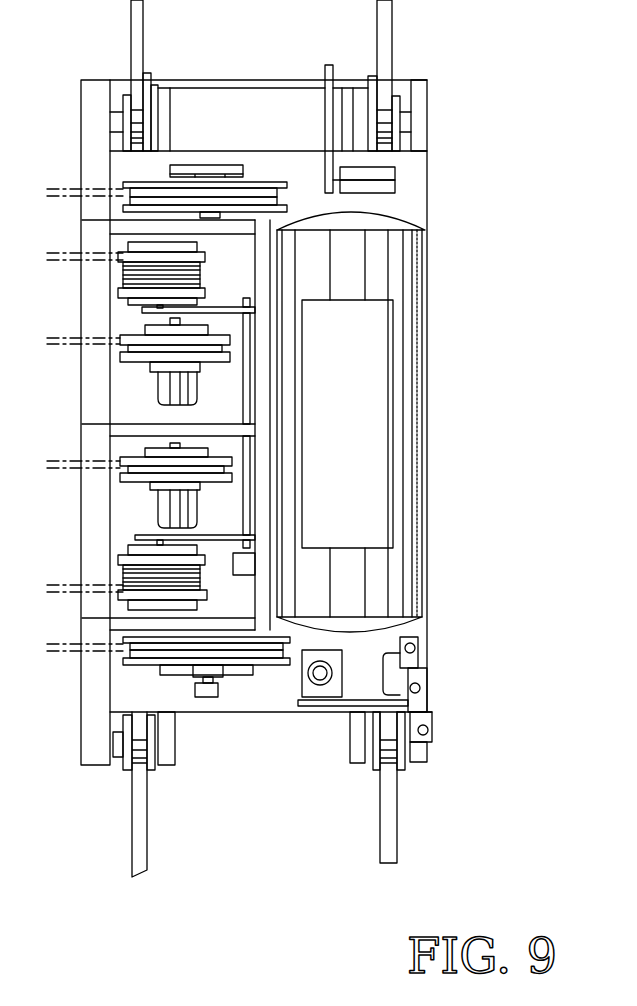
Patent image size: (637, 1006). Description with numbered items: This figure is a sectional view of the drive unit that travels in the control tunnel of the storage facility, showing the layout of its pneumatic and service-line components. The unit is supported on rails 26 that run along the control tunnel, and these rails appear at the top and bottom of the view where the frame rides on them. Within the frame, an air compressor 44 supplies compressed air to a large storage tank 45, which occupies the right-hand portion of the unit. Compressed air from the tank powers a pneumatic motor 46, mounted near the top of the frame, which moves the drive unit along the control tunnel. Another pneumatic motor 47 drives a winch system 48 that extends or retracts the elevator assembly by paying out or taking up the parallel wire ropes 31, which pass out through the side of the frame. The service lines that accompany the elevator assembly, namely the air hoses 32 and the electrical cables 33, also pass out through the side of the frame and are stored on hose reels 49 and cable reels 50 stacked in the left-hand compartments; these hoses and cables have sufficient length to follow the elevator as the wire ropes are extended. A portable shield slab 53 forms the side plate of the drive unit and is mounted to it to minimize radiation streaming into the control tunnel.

The rails 26 is at (148, 837).
The wire ropes 31 is at (46, 252).
The air hoses 32 is at (52, 188).
The electrical cables 33 is at (54, 346).
The air compressor 44 is at (302, 688).
The storage tank 45 is at (365, 373).
The pneumatic motor 46 is at (395, 178).
The pneumatic motor 47 is at (233, 566).
The winch system 48 is at (118, 277).
The hose reels 49 is at (250, 185).
The cable reels 50 is at (158, 378).
The portable shield slab 53 is at (82, 736).